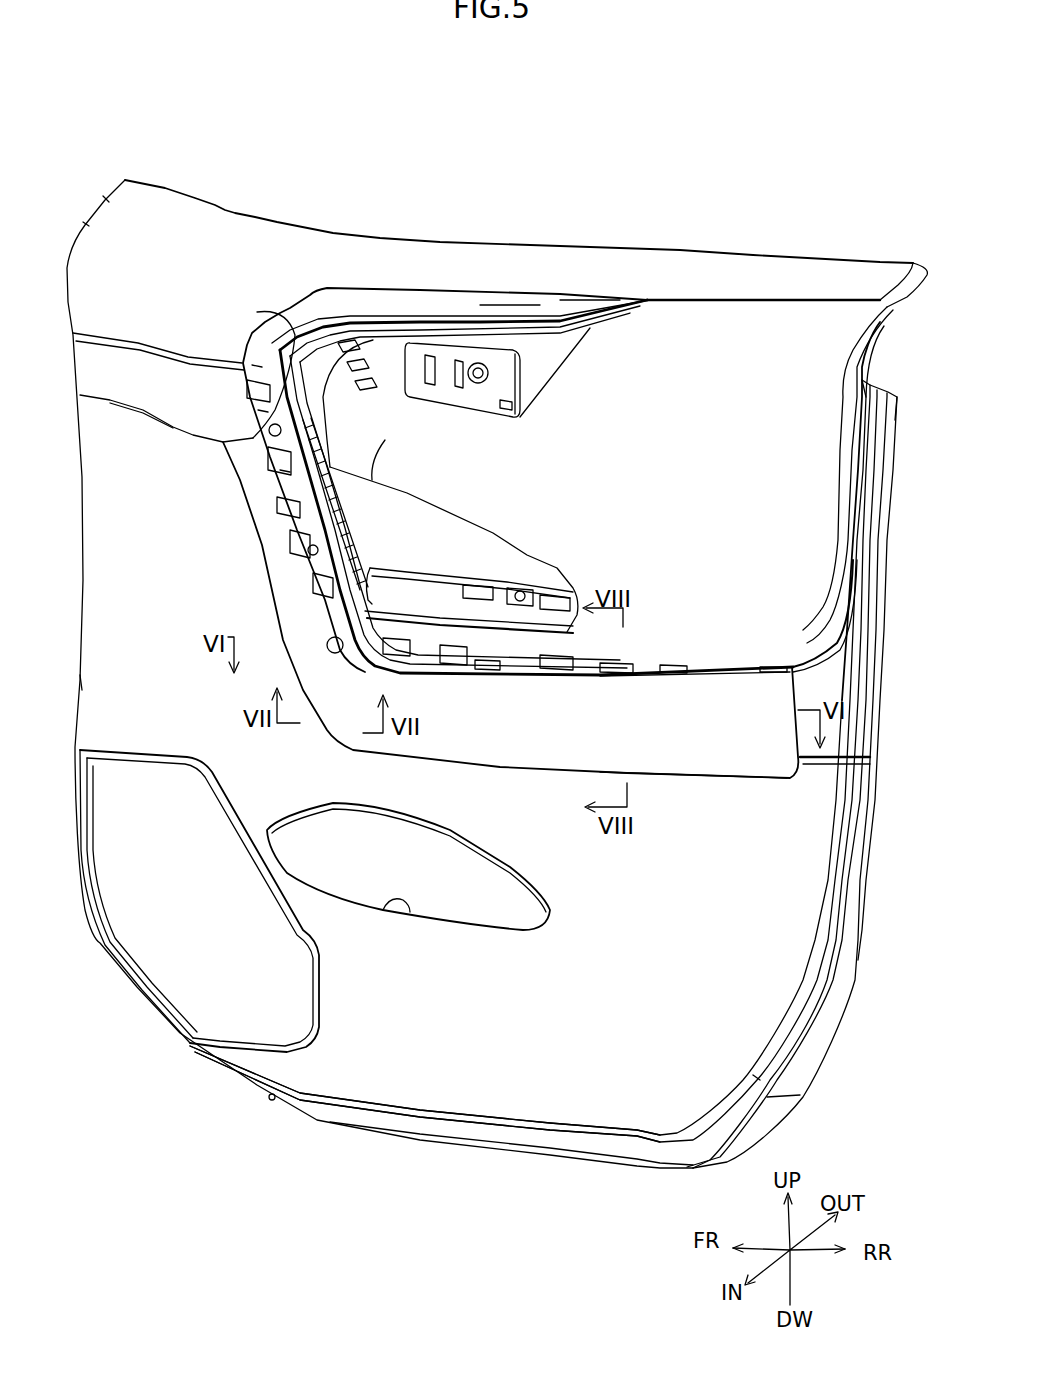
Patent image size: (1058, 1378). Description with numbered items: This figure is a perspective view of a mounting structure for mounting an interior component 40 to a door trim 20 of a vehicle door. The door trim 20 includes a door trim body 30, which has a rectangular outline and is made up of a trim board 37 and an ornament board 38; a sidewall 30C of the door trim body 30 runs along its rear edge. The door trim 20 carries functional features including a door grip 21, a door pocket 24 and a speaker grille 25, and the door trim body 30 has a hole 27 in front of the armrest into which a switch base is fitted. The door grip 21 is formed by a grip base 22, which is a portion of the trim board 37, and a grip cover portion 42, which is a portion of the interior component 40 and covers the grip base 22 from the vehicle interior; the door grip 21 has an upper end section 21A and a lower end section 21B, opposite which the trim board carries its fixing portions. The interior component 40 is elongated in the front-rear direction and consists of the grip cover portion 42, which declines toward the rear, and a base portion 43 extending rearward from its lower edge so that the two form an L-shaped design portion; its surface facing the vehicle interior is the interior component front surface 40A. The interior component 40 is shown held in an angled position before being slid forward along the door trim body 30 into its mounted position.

The door trim 20 is at (747, 180).
The door grip 21 is at (343, 132).
The grip cover portion 42 is at (247, 507).
The grip base 22 is at (325, 467).
The upper end section 21A is at (248, 420).
The lower end section 21B is at (367, 563).
The hole 27 is at (512, 590).
The interior component 40 is at (740, 788).
The interior component front surface 40A is at (767, 697).
The sidewall 30C is at (837, 731).
The speaker grille 25 is at (230, 1000).
The door pocket 24 is at (410, 913).
The base portion 43 is at (572, 735).
The door trim body 30 is at (662, 1217).
The trim board 37 is at (566, 1135).
The ornament board 38 is at (660, 665).